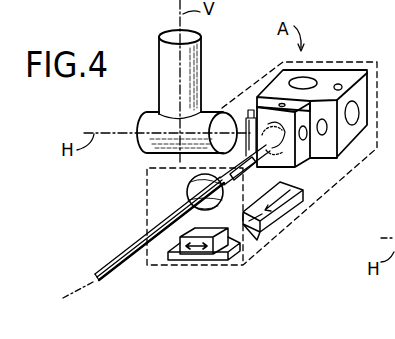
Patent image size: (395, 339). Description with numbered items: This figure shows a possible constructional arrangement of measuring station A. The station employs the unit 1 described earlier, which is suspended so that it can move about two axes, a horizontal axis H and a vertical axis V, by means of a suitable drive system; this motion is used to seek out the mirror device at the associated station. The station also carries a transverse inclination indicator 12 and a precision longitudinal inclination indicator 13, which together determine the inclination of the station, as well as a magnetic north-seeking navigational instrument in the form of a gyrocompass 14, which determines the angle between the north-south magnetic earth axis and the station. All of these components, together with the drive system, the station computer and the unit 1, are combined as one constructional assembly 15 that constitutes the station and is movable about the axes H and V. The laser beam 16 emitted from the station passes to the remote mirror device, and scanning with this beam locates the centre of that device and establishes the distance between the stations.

The unit 1 is at (190, 190).
The transverse inclination indicator 12 is at (200, 248).
The precision longitudinal inclination indicator 13 is at (280, 208).
The gyrocompass 14 is at (345, 140).
The constructional assembly 15 is at (337, 62).
The laser beam 16 is at (113, 258).